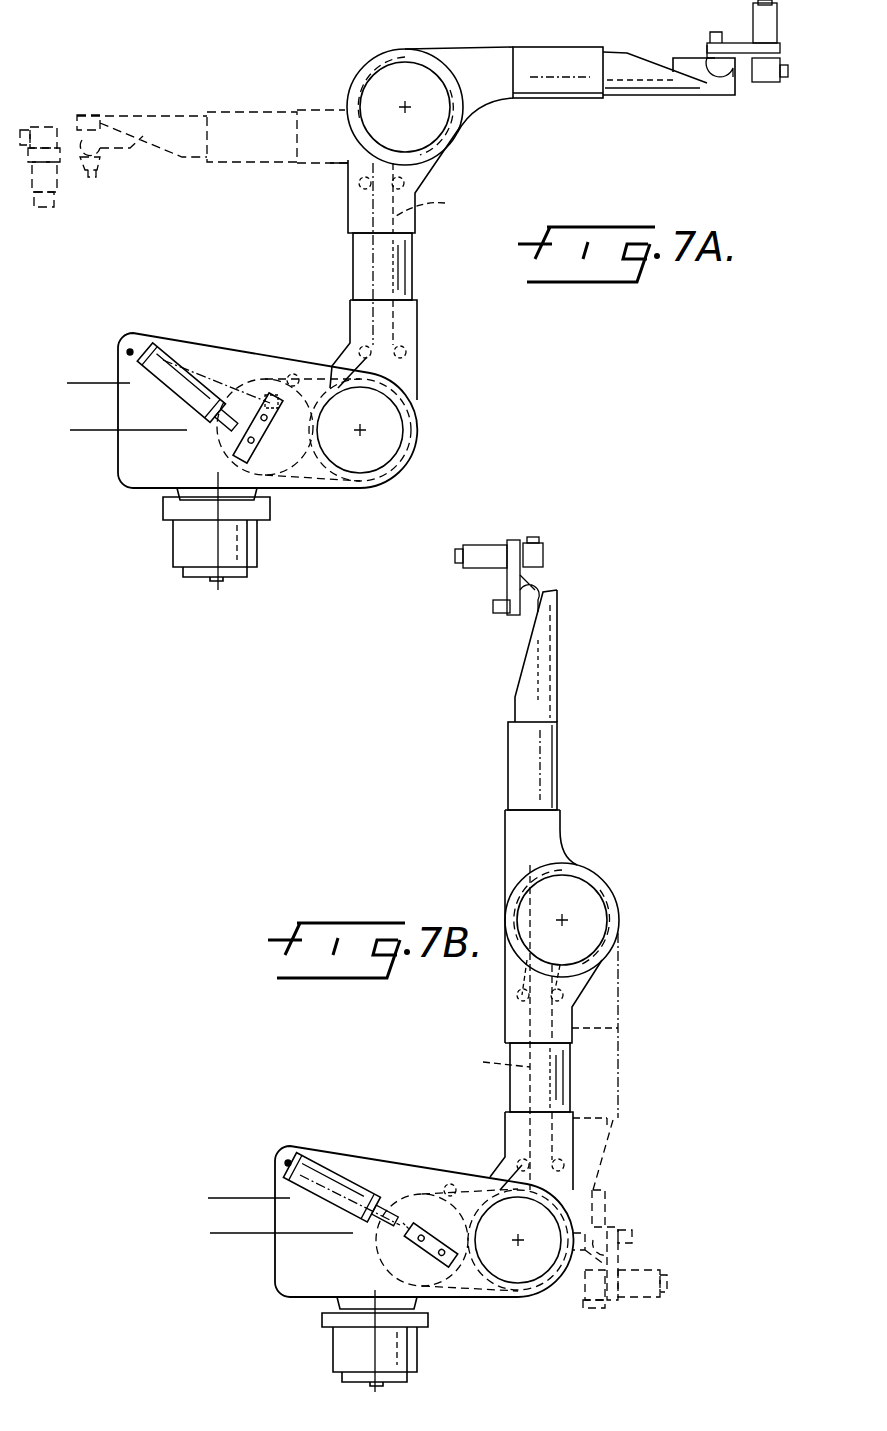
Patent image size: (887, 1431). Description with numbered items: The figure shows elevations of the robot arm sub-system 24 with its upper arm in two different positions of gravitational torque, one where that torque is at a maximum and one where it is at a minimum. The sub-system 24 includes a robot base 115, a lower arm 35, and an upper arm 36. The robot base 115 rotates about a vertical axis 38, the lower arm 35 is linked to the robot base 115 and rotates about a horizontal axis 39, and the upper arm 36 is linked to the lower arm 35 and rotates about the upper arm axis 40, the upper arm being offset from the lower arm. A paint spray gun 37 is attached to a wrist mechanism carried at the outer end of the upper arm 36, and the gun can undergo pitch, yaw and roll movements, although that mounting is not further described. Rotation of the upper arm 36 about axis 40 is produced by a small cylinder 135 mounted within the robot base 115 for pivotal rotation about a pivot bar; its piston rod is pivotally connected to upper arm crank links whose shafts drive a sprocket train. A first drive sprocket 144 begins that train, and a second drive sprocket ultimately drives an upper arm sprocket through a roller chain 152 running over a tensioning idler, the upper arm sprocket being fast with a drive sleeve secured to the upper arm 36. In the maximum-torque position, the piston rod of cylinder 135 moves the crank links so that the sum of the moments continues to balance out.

In FIG. 7A, the robot arm sub-system 24 is at (330, 340).
In FIG. 7B, the robot arm sub-system 24 is at (423, 1133).
In FIG. 7A, the lower arm 35 is at (413, 273).
In FIG. 7B, the lower arm 35 is at (510, 1090).
In FIG. 7A, the upper arm 36 is at (577, 100).
In FIG. 7B, the upper arm 36 is at (547, 777).
In FIG. 7A, the paint spray gun 37 is at (768, 85).
In FIG. 7B, the paint spray gun 37 is at (507, 577).
In FIG. 7A, the vertical axis 38 is at (212, 577).
In FIG. 7B, the vertical axis 38 is at (375, 1342).
In FIG. 7A, the horizontal axis 39 is at (363, 433).
In FIG. 7B, the horizontal axis 39 is at (520, 1243).
In FIG. 7A, the upper arm axis 40 is at (408, 110).
In FIG. 7B, the upper arm axis 40 is at (565, 917).
In FIG. 7A, the robot base 115 is at (115, 460).
In FIG. 7B, the robot base 115 is at (273, 1260).
In FIG. 7A, the small cylinder 135 is at (157, 355).
In FIG. 7B, the small cylinder 135 is at (333, 1178).
In FIG. 7A, the first drive sprocket 144 is at (220, 453).
In FIG. 7B, the first drive sprocket 144 is at (373, 1255).
In FIG. 7A, the roller chain 152 is at (442, 204).
In FIG. 7B, the roller chain 152 is at (482, 1063).